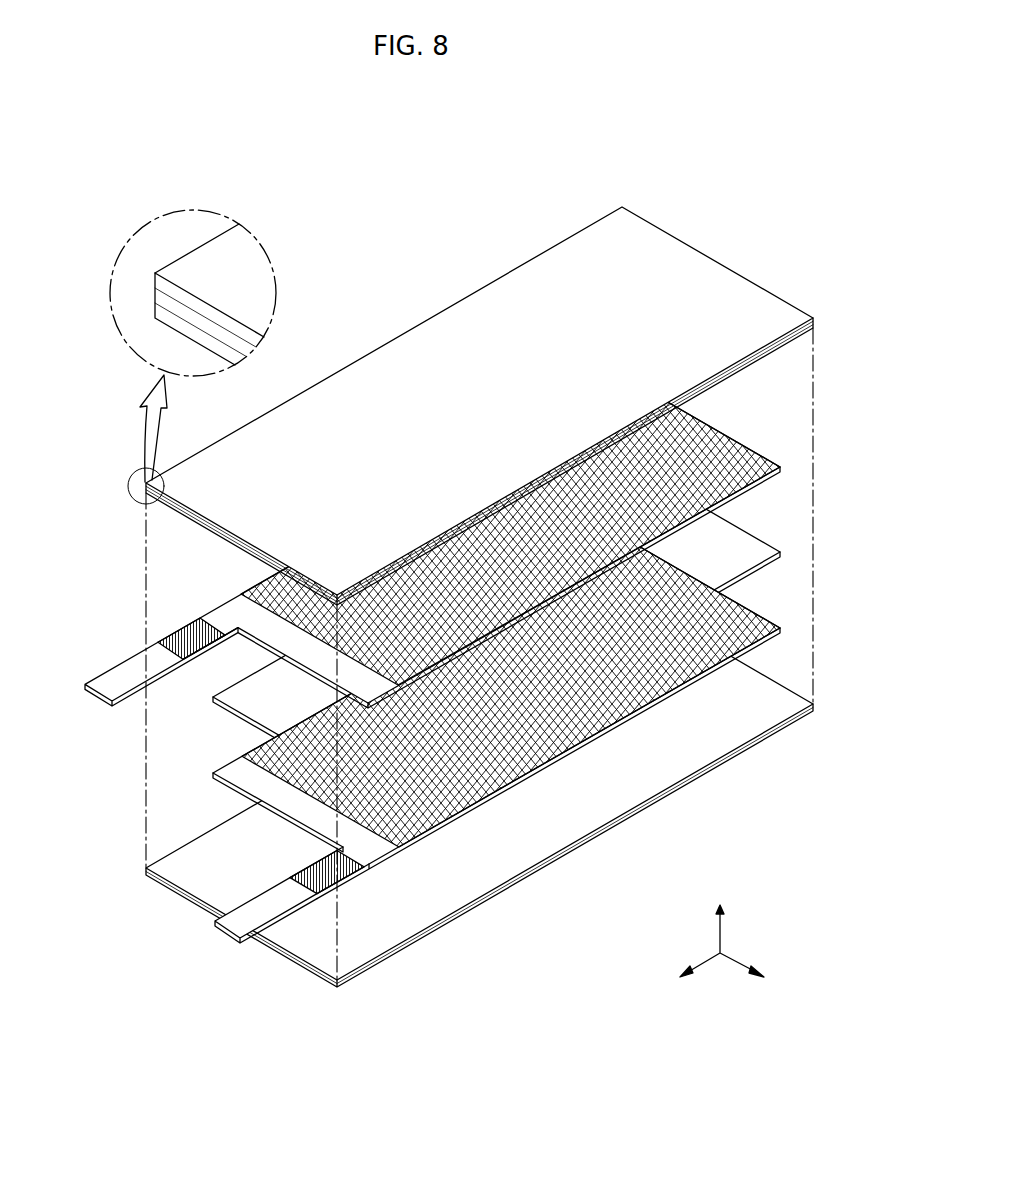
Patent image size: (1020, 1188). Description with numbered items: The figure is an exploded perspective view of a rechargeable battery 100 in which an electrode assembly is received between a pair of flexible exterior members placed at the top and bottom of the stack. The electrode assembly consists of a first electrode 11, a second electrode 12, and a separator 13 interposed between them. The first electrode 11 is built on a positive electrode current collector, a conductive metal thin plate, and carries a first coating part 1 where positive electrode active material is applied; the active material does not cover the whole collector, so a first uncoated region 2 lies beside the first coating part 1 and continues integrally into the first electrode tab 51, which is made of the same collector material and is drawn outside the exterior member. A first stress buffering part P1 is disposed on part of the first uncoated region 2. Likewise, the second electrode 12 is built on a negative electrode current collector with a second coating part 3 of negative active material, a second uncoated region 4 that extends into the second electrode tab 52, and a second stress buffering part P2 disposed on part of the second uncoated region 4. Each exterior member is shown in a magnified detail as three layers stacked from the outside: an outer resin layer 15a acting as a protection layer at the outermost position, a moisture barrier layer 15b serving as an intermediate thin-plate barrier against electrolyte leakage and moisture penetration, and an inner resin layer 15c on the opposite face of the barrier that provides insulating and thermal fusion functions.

The rechargeable battery 100 is at (448, 177).
The outer resin layer 15a is at (153, 278).
The moisture barrier layer 15b is at (153, 296).
The inner resin layer 15c is at (153, 312).
The first electrode 11 is at (111, 573).
The first coating part 1 is at (251, 593).
The first uncoated region 2 is at (233, 611).
The first electrode tab 51 is at (102, 693).
The first stress buffering part P1 is at (196, 645).
The separator 13 is at (738, 546).
The second electrode 12 is at (497, 957).
The second coating part 3 is at (418, 838).
The second uncoated region 4 is at (367, 857).
The second electrode tab 52 is at (233, 932).
The second stress buffering part P2 is at (318, 878).